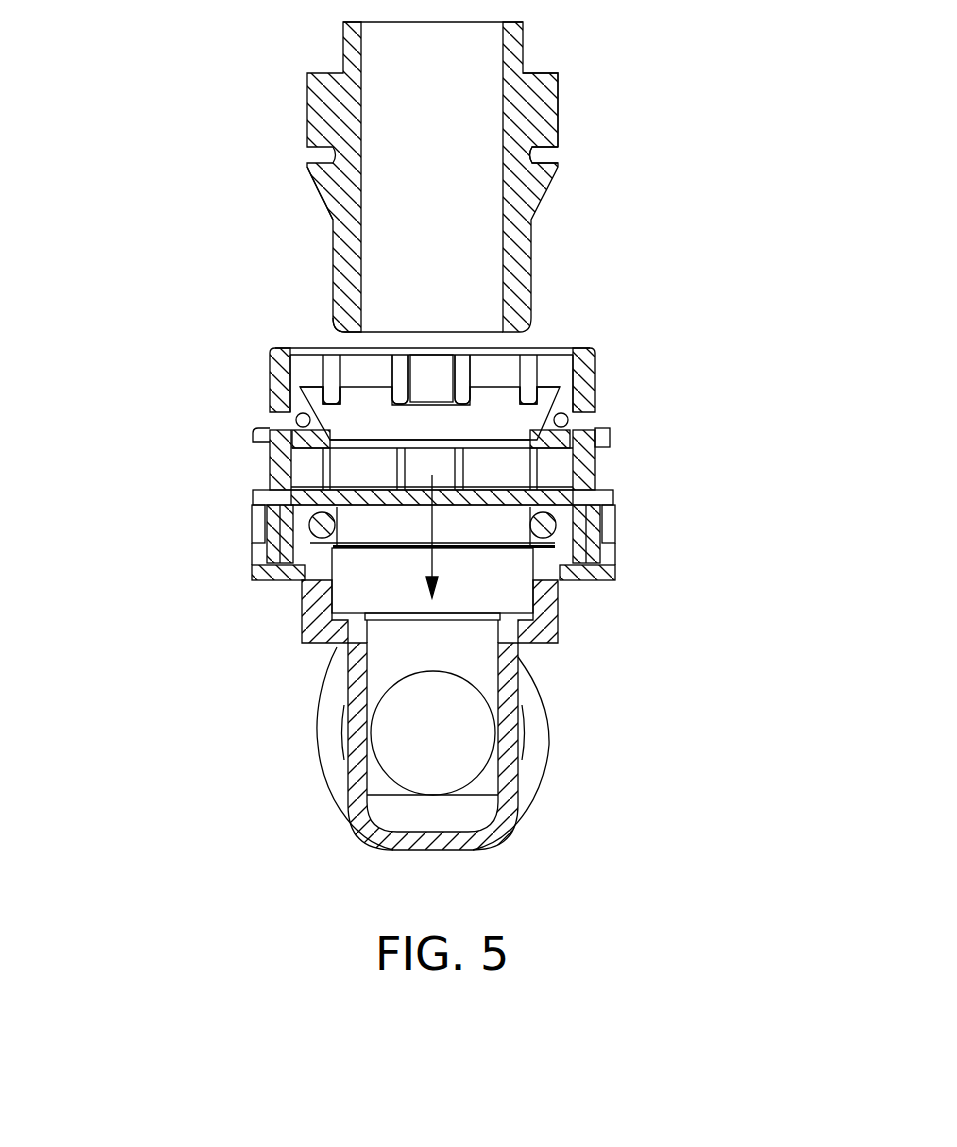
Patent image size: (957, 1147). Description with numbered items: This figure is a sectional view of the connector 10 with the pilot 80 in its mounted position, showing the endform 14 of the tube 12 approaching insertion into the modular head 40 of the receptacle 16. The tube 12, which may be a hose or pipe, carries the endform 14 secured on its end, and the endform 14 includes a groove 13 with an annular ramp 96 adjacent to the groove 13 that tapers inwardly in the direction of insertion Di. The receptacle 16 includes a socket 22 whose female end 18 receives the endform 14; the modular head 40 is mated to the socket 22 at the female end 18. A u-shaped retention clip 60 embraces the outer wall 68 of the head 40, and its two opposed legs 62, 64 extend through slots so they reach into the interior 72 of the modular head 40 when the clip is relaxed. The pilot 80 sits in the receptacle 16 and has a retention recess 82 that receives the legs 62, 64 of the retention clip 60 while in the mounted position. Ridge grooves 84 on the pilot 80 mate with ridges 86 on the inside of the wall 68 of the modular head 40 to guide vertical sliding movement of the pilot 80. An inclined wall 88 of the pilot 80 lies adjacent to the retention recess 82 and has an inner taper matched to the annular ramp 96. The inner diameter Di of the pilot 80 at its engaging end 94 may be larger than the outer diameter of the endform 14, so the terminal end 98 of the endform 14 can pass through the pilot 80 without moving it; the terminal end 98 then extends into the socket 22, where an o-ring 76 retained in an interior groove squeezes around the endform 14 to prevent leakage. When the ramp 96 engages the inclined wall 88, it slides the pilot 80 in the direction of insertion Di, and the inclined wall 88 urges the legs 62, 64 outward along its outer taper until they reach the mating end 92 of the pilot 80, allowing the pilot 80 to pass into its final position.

The connector 10 is at (231, 531).
The tube 12 is at (343, 37).
The groove 13 is at (550, 153).
The endform 14 is at (537, 88).
The receptacle 16 is at (605, 540).
The female end 18 is at (643, 600).
The socket 22 is at (300, 506).
The modular head 40 is at (590, 355).
The retention clip 60 is at (243, 455).
The leg 62 is at (270, 432).
The leg 64 is at (575, 420).
The outer wall 68 is at (288, 380).
The interior 72 is at (366, 488).
The o-ring 76 is at (553, 512).
The pilot 80 is at (273, 352).
The retention recess 82 is at (297, 418).
The ridge grooves 84 is at (405, 365).
The ridges 86 is at (400, 360).
The inclined wall 88 is at (303, 405).
The mating end 92 is at (522, 362).
The engaging end 94 is at (602, 543).
The annular ramp 96 is at (325, 192).
The terminal end 98 is at (340, 338).
The direction of insertion Di is at (427, 568).